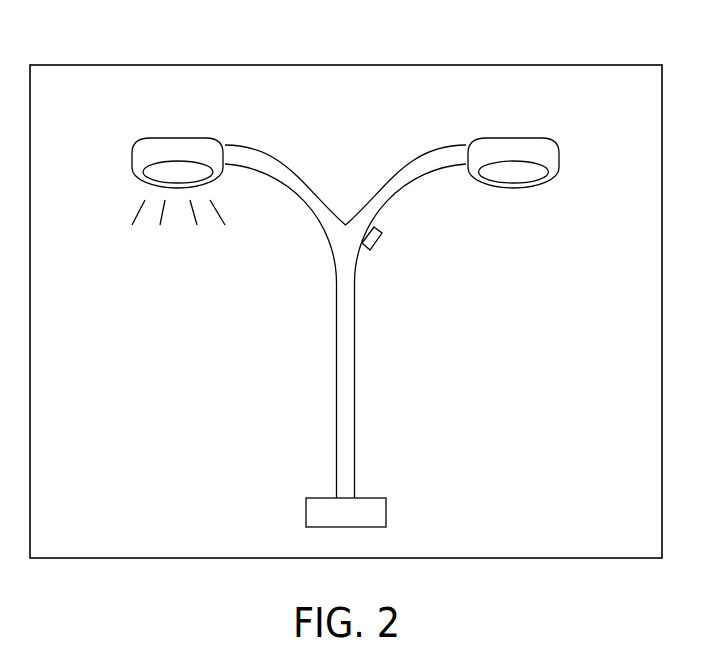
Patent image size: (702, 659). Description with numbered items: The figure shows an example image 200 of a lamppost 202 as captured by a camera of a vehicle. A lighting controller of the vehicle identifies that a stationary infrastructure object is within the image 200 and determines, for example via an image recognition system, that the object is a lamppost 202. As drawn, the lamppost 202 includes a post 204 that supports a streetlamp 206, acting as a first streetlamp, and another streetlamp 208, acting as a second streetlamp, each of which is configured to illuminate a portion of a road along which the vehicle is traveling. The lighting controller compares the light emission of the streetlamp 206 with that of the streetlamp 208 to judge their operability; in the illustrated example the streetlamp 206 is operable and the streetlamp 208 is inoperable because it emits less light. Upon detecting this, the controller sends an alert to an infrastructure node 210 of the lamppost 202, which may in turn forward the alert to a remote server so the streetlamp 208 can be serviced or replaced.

The image 200 is at (566, 65).
The lamppost 202 is at (117, 110).
The post 204 is at (355, 388).
The streetlamp 206 is at (180, 138).
The streetlamp 208 is at (517, 138).
The infrastructure node 210 is at (383, 239).